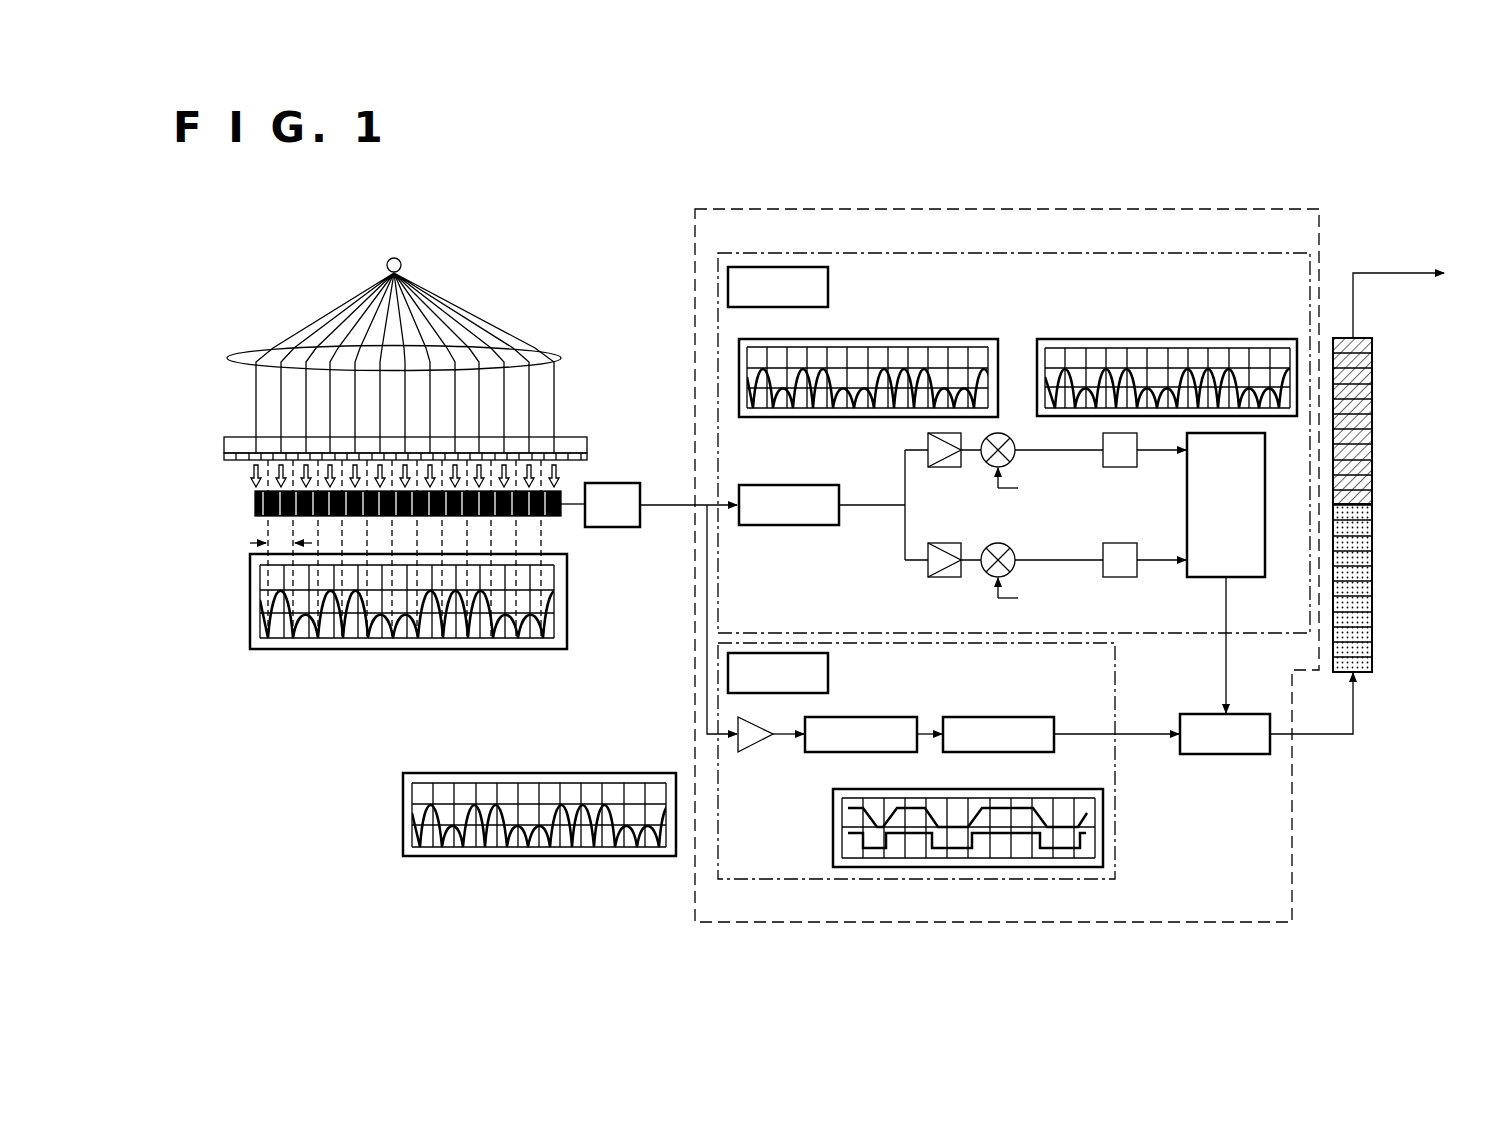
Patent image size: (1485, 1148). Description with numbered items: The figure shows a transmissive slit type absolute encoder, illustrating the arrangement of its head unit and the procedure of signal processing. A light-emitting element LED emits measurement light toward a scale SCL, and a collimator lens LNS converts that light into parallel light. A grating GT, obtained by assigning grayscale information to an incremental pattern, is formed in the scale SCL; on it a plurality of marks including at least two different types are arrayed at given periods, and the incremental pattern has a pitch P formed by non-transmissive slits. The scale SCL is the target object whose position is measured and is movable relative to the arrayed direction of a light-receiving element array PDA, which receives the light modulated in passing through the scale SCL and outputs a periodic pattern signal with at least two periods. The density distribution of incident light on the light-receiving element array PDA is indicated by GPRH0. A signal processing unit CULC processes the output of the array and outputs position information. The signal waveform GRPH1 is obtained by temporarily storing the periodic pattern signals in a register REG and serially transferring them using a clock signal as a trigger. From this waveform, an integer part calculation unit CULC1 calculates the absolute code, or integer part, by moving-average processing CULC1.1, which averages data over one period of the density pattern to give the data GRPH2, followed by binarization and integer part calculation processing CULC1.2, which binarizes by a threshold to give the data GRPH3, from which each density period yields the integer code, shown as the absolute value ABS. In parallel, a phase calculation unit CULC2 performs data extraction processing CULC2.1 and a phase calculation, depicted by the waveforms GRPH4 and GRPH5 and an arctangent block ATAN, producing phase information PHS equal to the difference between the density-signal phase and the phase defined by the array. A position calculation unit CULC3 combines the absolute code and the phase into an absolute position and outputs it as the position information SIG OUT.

The light-emitting element LED is at (405, 353).
The collimator lens LNS is at (364, 358).
The scale SCL is at (377, 447).
The grating GT is at (364, 549).
The light-receiving element array PDA is at (376, 503).
The pitch P is at (281, 532).
The density distribution of incident light GPRH0 is at (360, 601).
The signal waveform GRPH1 is at (658, 506).
The signal processing unit CULC is at (1007, 565).
The phase calculation unit CULC2 is at (1014, 443).
The graph of sine-multiplied signal GRPH4 is at (858, 505).
The graph of cosine-multiplied signal GRPH5 is at (1076, 560).
The data extraction processing CULC2.1 is at (962, 505).
The arctangent unit ATAN is at (1226, 505).
The phase information PHS is at (1248, 645).
The integer part calculation unit CULC1 is at (911, 692).
The moving-average processing CULC1.1 is at (873, 734).
The binarization and integer part calculation processing CULC1.2 is at (1061, 734).
The absolute position signal ABS is at (1154, 720).
The moving-averaged data GRPH2 is at (897, 805).
The binarized data GRPH3 is at (1023, 833).
The position calculation unit CULC3 is at (1266, 713).
The register REG is at (1337, 520).
The signal output SIG OUT is at (1398, 291).